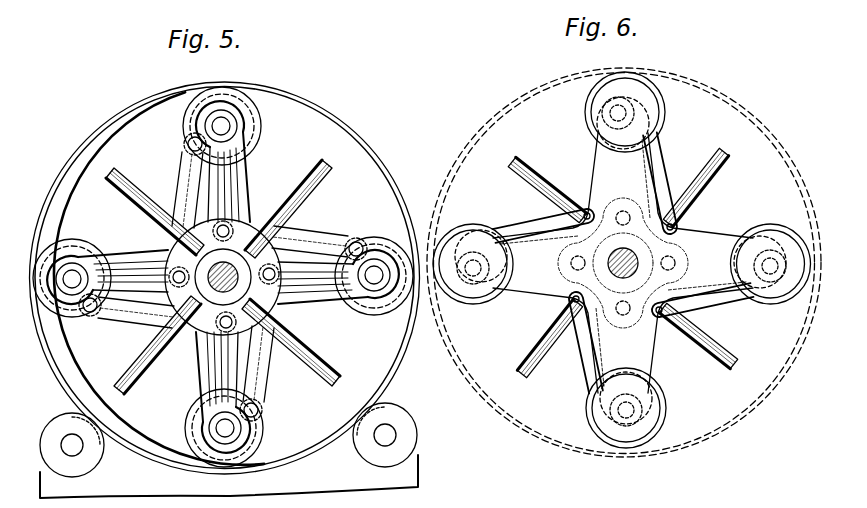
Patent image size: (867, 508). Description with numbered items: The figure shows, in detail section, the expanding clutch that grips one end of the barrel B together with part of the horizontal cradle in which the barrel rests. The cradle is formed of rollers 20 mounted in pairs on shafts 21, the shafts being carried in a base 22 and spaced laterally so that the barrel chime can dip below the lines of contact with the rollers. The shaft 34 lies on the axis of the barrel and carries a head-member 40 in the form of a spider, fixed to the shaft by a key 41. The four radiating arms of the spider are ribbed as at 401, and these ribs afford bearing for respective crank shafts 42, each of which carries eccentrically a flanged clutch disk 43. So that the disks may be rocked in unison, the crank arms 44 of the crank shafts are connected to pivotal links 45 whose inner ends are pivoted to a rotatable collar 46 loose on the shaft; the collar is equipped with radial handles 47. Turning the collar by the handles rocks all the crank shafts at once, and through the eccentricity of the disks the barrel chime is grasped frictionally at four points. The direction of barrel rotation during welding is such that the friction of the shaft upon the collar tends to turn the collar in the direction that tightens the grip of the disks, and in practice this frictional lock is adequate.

In FIG. 5, the roller 20 is at (96, 453).
In FIG. 5, the shaft 21 is at (74, 450).
In FIG. 5, the base 22 is at (406, 472).
In FIG. 5, the shaft 34 is at (216, 295).
In FIG. 6, the shaft 34 is at (640, 268).
In FIG. 5, the head-member 40 is at (223, 277).
In FIG. 6, the head-member 40 is at (617, 347).
In FIG. 5, the rib 401 is at (224, 197).
In FIG. 5, the key 41 is at (190, 131).
In FIG. 6, the key 41 is at (683, 219).
In FIG. 5, the crank shaft 42 is at (215, 122).
In FIG. 6, the crank shaft 42 is at (597, 133).
In FIG. 5, the flanged clutch disk 43 is at (251, 119).
In FIG. 6, the flanged clutch disk 43 is at (653, 104).
In FIG. 6, the crank arm 44 is at (627, 135).
In FIG. 5, the pivotal link 45 is at (183, 181).
In FIG. 6, the pivotal link 45 is at (658, 177).
In FIG. 5, the rotatable collar 46 is at (180, 255).
In FIG. 5, the radial handle 47 is at (128, 178).
In FIG. 6, the radial handle 47 is at (723, 164).
In FIG. 5, the barrel B is at (397, 367).
In FIG. 6, the barrel B is at (772, 390).